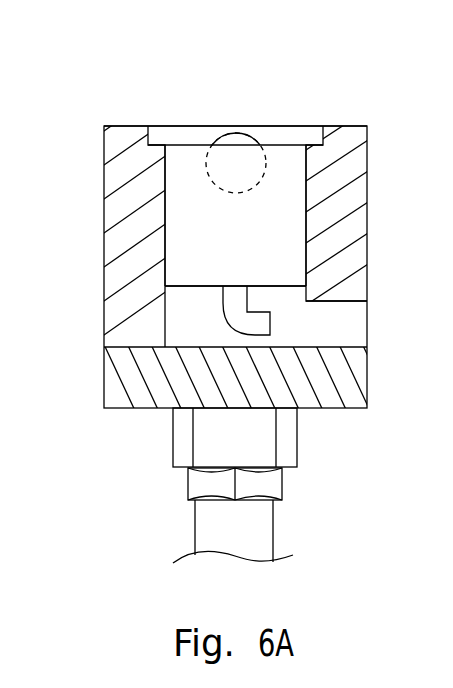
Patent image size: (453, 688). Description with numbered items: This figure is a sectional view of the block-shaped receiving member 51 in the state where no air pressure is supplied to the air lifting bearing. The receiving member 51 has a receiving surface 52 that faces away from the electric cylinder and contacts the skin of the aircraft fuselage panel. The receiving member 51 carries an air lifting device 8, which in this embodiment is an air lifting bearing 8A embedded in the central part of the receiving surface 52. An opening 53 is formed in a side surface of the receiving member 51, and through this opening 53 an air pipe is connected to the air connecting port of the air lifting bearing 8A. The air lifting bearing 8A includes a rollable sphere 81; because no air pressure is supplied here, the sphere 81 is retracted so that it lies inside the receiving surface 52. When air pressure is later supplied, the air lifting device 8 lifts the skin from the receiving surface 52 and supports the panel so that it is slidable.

The air lifting device 8 is at (218, 147).
The air lifting bearing 8A is at (188, 175).
The sphere 81 is at (240, 133).
The receiving member 51 is at (132, 215).
The receiving surface 52 is at (345, 126).
The opening 53 is at (334, 329).